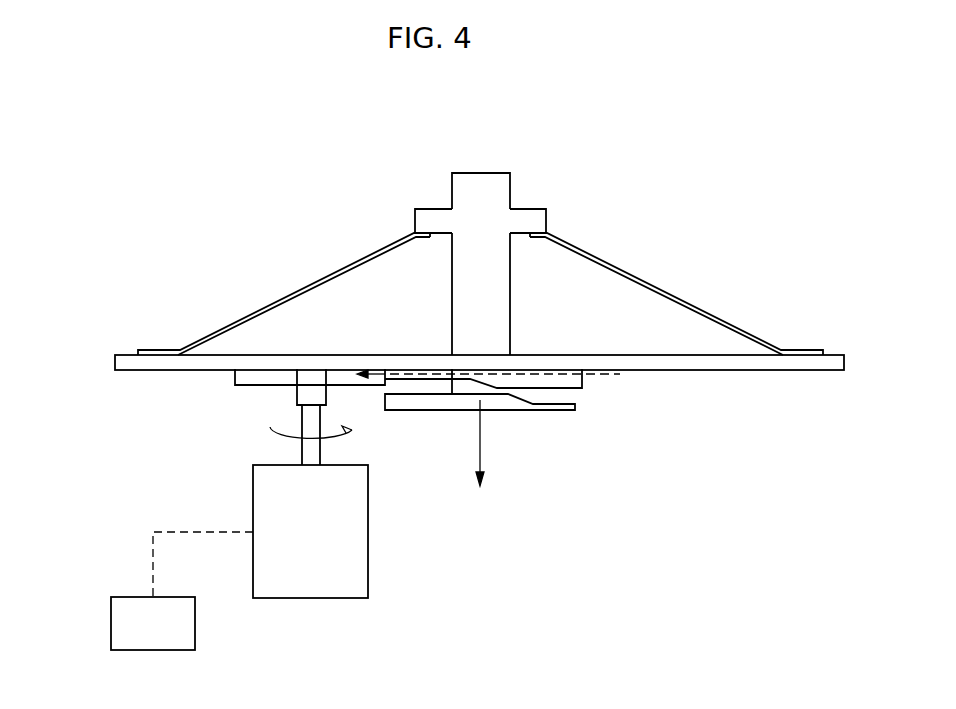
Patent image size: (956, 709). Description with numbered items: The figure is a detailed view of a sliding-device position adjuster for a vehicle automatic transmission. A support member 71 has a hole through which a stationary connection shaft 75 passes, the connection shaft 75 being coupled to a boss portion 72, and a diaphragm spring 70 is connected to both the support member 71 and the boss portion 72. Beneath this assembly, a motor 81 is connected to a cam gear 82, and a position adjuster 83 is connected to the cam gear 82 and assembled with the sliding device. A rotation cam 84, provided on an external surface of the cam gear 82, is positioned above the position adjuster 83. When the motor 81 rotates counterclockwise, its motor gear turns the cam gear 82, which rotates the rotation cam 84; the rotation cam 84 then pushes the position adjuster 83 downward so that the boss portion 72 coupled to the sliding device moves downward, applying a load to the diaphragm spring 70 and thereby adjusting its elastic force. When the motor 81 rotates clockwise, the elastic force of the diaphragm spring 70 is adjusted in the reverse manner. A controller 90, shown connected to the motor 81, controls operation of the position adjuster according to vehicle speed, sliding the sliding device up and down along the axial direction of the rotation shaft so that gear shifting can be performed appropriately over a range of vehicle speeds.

The diaphragm spring 70 is at (600, 252).
The support member 71 is at (835, 363).
The boss portion 72 is at (528, 218).
The connection shaft 75 is at (476, 185).
The motor 81 is at (355, 542).
The cam gear 82 is at (240, 383).
The position adjuster 83 is at (562, 406).
The rotation cam 84 is at (583, 380).
The controller 90 is at (128, 628).